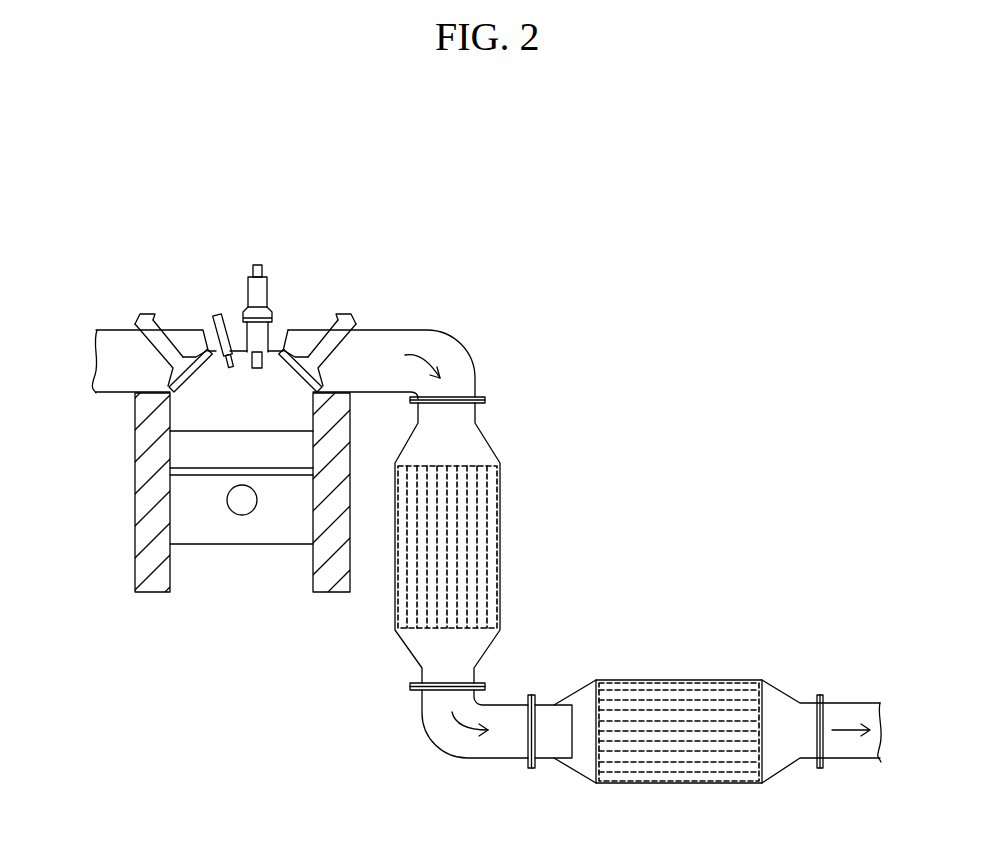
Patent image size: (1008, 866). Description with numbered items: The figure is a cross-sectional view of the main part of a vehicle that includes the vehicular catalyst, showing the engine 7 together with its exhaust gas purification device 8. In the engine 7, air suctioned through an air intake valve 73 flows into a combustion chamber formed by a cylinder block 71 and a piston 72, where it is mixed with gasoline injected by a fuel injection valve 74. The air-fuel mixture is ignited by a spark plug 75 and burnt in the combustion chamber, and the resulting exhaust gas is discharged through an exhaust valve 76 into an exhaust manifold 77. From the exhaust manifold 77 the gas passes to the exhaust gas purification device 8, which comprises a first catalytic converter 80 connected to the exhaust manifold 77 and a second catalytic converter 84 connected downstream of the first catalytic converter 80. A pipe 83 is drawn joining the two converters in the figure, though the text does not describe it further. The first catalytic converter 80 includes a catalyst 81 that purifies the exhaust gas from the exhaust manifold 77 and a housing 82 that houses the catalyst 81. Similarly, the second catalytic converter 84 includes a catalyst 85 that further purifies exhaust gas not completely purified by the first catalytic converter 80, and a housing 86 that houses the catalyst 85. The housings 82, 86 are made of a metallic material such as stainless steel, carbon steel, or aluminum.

The engine 7 is at (82, 262).
The cylinder block 71 is at (150, 535).
The piston 72 is at (188, 449).
The air intake valve 73 is at (147, 328).
The fuel injection valve 74 is at (221, 328).
The spark plug 75 is at (262, 295).
The exhaust valve 76 is at (345, 313).
The exhaust manifold 77 is at (458, 362).
The exhaust gas purification device 8 is at (582, 318).
The catalytic converter 80 is at (557, 463).
The catalyst 81 is at (480, 611).
The housing 82 is at (395, 562).
The connecting exhaust pipe 83 is at (502, 752).
The catalytic converter 84 is at (725, 655).
The catalyst 85 is at (685, 760).
The housing 86 is at (620, 680).